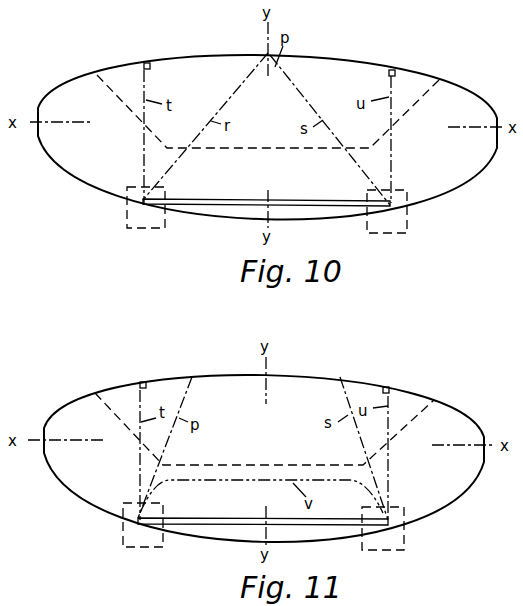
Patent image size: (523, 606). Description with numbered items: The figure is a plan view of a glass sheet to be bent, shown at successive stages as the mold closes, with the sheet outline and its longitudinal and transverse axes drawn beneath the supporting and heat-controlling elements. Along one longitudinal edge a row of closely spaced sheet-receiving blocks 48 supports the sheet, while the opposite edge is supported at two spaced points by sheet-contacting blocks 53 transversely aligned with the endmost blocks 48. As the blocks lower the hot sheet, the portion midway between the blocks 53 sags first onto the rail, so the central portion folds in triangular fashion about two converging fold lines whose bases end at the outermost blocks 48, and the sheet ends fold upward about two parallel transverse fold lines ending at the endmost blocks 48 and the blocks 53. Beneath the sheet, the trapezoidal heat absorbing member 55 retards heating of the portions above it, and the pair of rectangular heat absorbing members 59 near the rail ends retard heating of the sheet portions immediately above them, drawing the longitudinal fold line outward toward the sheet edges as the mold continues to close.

In FIG. 10, the sheet-contacting blocks 53 is at (147, 64).
In FIG. 11, the sheet-contacting blocks 53 is at (141, 382).
In FIG. 10, the heat absorbing member 55 is at (232, 150).
In FIG. 11, the heat absorbing member 55 is at (282, 466).
In FIG. 10, the sheet-receiving blocks 48 is at (192, 203).
In FIG. 11, the sheet-receiving blocks 48 is at (185, 525).
In FIG. 10, the heat absorbing members 59 is at (139, 229).
In FIG. 11, the heat absorbing members 59 is at (122, 542).